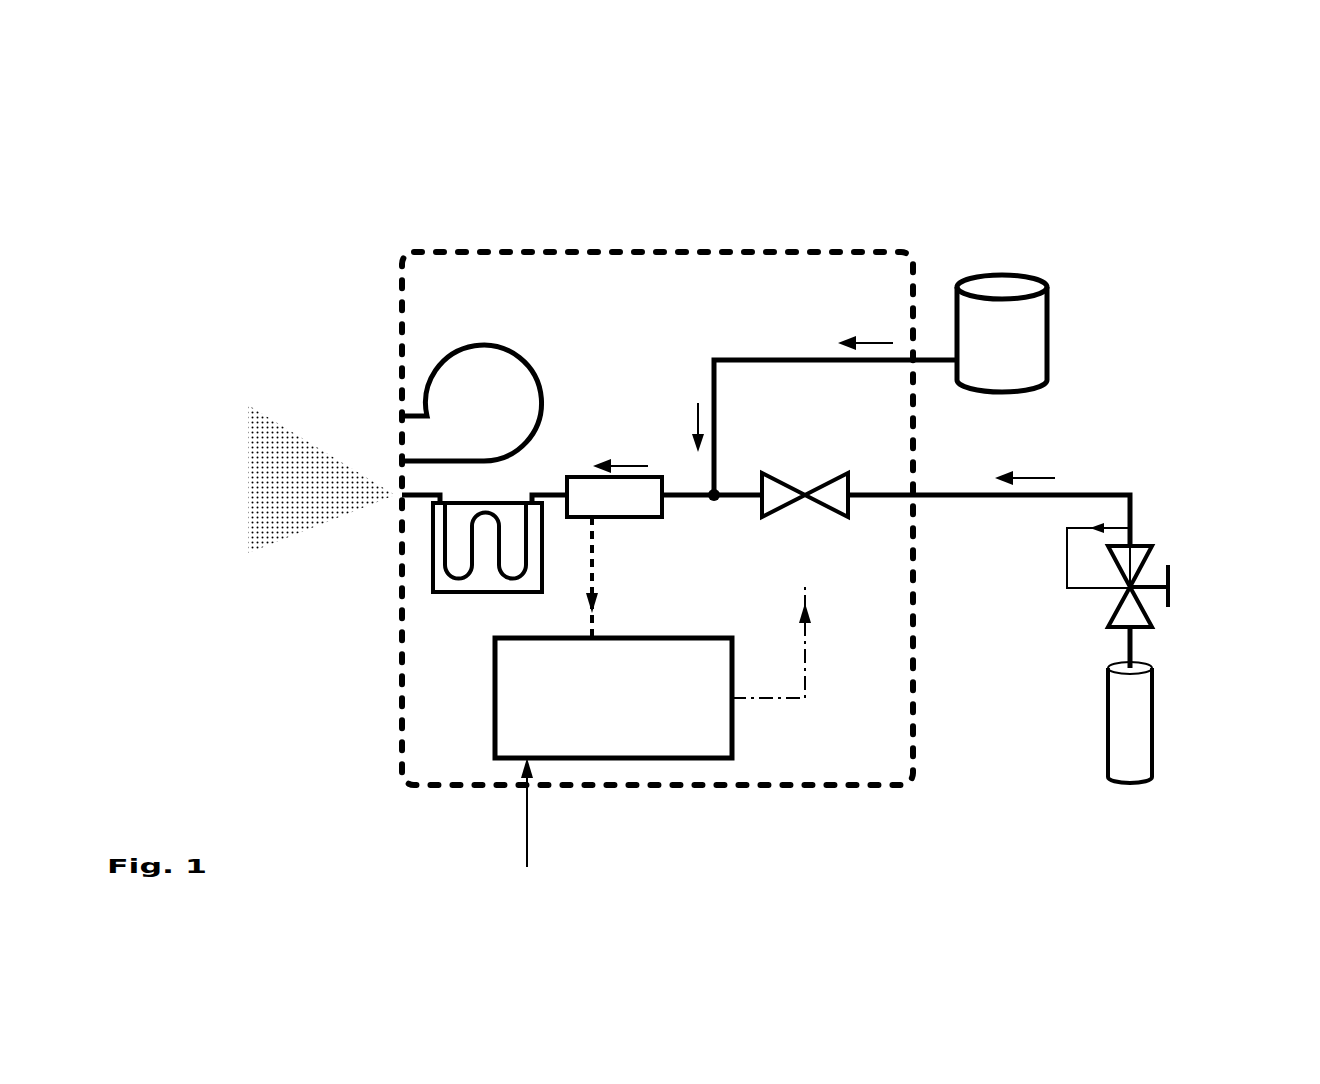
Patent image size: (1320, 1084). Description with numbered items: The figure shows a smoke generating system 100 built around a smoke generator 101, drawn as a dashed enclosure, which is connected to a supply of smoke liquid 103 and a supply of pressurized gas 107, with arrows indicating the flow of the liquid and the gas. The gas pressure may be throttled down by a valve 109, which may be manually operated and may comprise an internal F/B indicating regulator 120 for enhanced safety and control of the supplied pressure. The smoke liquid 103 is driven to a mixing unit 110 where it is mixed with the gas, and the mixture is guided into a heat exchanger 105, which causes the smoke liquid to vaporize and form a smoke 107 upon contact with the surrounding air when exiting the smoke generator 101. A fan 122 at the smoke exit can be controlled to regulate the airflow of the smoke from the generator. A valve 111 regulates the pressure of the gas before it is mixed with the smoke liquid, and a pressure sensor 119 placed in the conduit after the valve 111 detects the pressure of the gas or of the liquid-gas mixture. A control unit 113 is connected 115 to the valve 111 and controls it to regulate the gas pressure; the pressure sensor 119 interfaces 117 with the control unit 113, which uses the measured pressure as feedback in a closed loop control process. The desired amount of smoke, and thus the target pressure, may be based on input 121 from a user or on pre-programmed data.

The smoke generating system 100 is at (1108, 228).
The smoke generator 101 is at (400, 278).
The supply of smoke liquid 103 is at (1000, 275).
The heat exchanger 105 is at (493, 503).
The supply of pressurized gas 107 is at (298, 502).
The valve 109 is at (1138, 597).
The mixing unit 110 is at (712, 492).
The valve 111 is at (804, 492).
The control unit 113 is at (613, 698).
The connection 115 is at (806, 699).
The interface 117 is at (592, 578).
The pressure sensor 119 is at (614, 488).
The internal F/B indicating regulator 120 is at (1067, 563).
The input 121 is at (527, 835).
The fan 122 is at (472, 403).